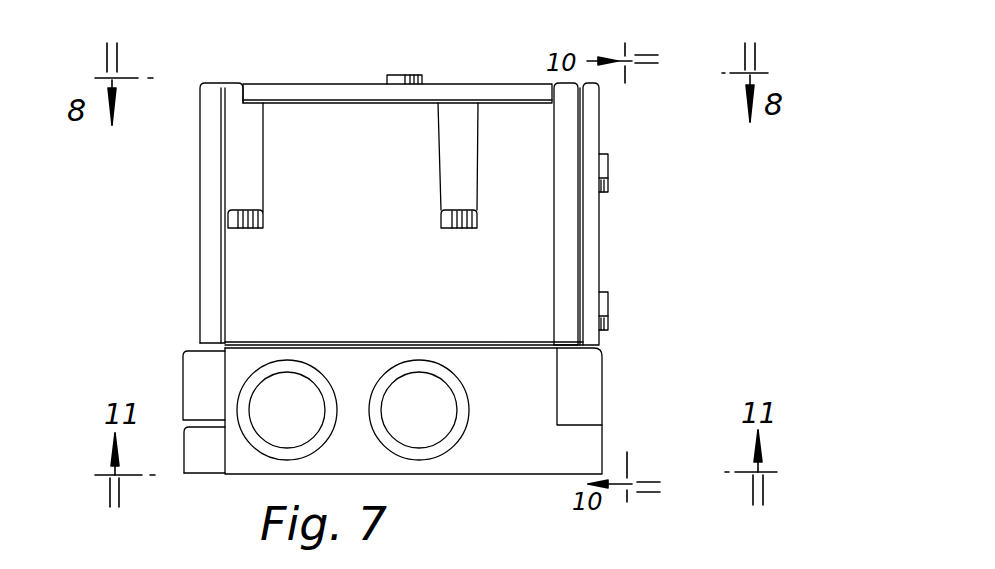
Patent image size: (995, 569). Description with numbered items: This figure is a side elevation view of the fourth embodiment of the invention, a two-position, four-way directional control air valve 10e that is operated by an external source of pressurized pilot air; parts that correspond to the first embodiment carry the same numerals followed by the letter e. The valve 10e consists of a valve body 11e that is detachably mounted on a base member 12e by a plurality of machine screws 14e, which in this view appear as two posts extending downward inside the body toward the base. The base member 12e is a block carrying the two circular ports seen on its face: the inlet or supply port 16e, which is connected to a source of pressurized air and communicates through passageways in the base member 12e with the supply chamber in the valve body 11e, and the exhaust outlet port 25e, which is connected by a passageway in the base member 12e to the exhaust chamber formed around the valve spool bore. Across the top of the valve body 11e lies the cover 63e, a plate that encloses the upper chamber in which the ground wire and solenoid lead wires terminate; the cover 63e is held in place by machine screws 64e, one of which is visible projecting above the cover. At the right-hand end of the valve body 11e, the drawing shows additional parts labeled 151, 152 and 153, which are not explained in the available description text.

The two-position, four-way directional control air valve 10e is at (200, 237).
The valve body 11e is at (540, 276).
The base member 12e is at (585, 438).
The machine screws 14e is at (241, 229).
The inlet or supply port 16e is at (296, 441).
The exhaust outlet port 25e is at (450, 400).
The cover 63e is at (309, 88).
The machine screws 64e is at (420, 76).
The right wall 151 is at (588, 218).
The inner wall line 152 is at (580, 246).
The side knobs 153 is at (608, 172).